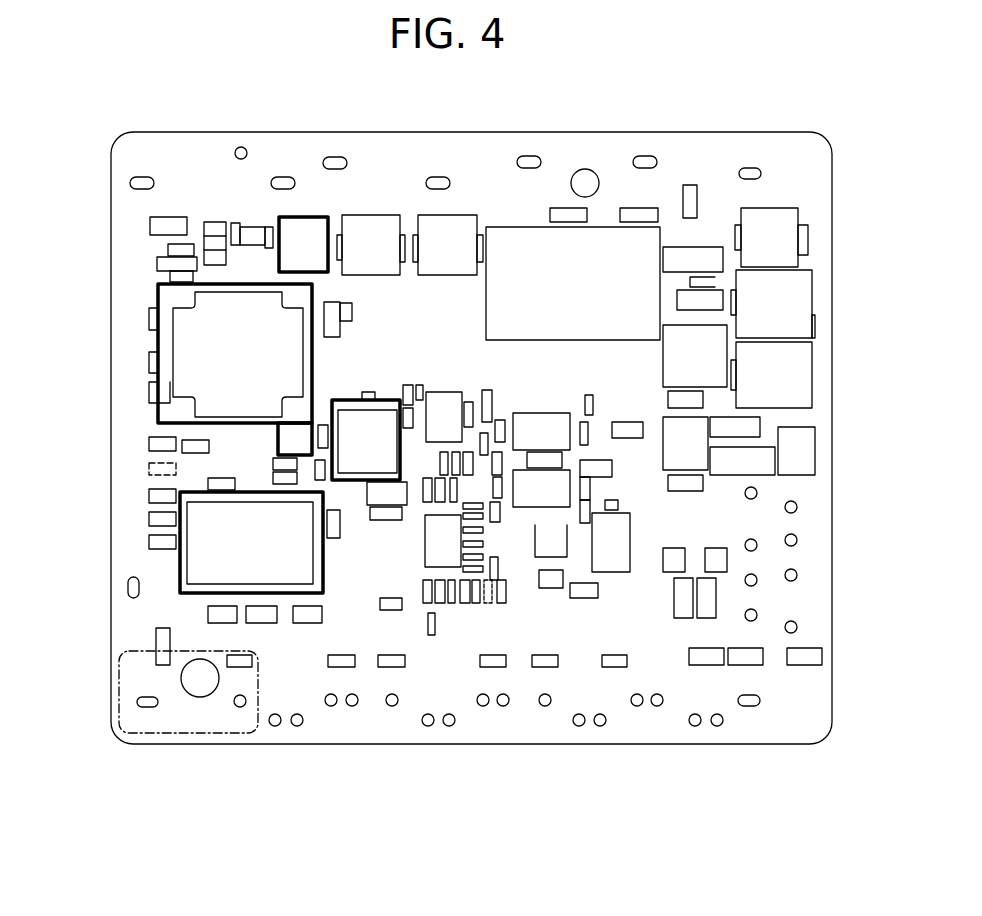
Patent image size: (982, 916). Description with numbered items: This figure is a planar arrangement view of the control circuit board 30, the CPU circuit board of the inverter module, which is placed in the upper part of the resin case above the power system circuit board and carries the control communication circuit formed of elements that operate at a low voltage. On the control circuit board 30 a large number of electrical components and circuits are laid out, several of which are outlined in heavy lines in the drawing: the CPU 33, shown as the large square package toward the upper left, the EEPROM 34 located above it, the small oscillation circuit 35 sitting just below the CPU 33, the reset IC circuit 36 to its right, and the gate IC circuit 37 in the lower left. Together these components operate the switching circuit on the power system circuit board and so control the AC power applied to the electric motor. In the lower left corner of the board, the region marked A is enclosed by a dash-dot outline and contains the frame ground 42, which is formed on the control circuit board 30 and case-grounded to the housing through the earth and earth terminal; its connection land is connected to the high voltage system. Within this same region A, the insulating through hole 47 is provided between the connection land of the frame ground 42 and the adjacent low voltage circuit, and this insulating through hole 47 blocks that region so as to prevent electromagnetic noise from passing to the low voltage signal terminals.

The control circuit board 30 is at (577, 132).
The CPU 33 is at (158, 293).
The EEPROM 34 is at (310, 217).
The oscillation circuit 35 is at (278, 440).
The reset IC circuit 36 is at (388, 395).
The gate IC circuit 37 is at (180, 570).
The frame ground 42 is at (137, 700).
The insulating through hole 47 is at (200, 680).
The region A is at (120, 651).